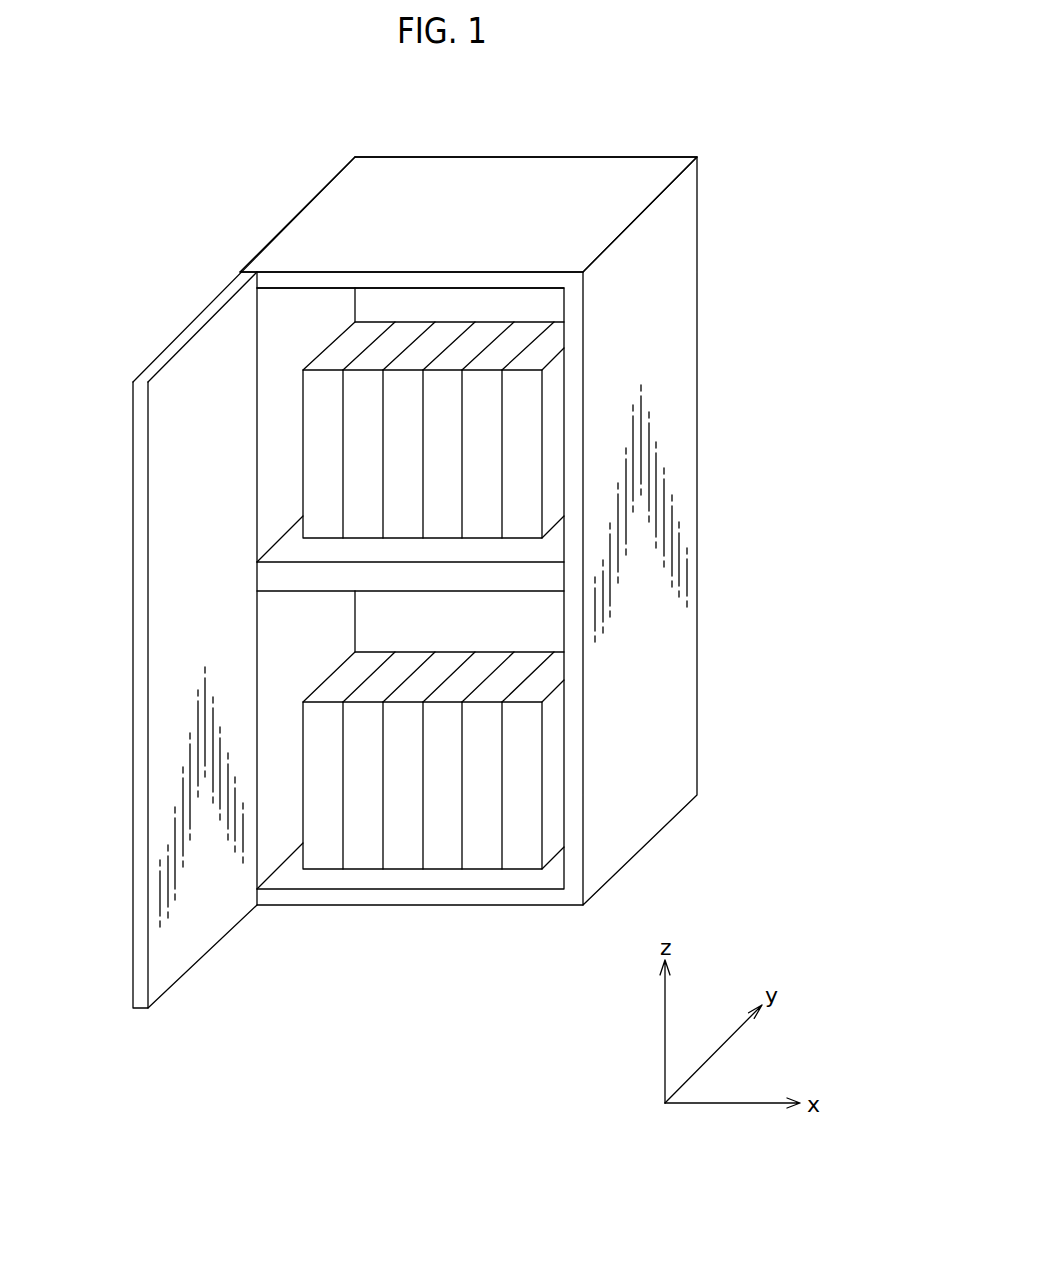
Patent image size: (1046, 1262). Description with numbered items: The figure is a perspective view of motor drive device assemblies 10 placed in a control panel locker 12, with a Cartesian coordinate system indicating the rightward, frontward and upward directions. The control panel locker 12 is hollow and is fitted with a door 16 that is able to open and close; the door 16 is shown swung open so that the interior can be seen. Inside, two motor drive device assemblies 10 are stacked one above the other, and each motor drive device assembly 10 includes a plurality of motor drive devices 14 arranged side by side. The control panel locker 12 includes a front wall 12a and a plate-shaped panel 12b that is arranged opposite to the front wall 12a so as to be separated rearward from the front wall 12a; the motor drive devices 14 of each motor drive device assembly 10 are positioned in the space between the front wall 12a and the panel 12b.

The motor drive device assembly 10 is at (300, 325).
The control panel locker 12 is at (698, 327).
The front wall 12a is at (540, 158).
The panel 12b is at (515, 307).
The motor drive device 14 is at (435, 337).
The door 16 is at (138, 462).